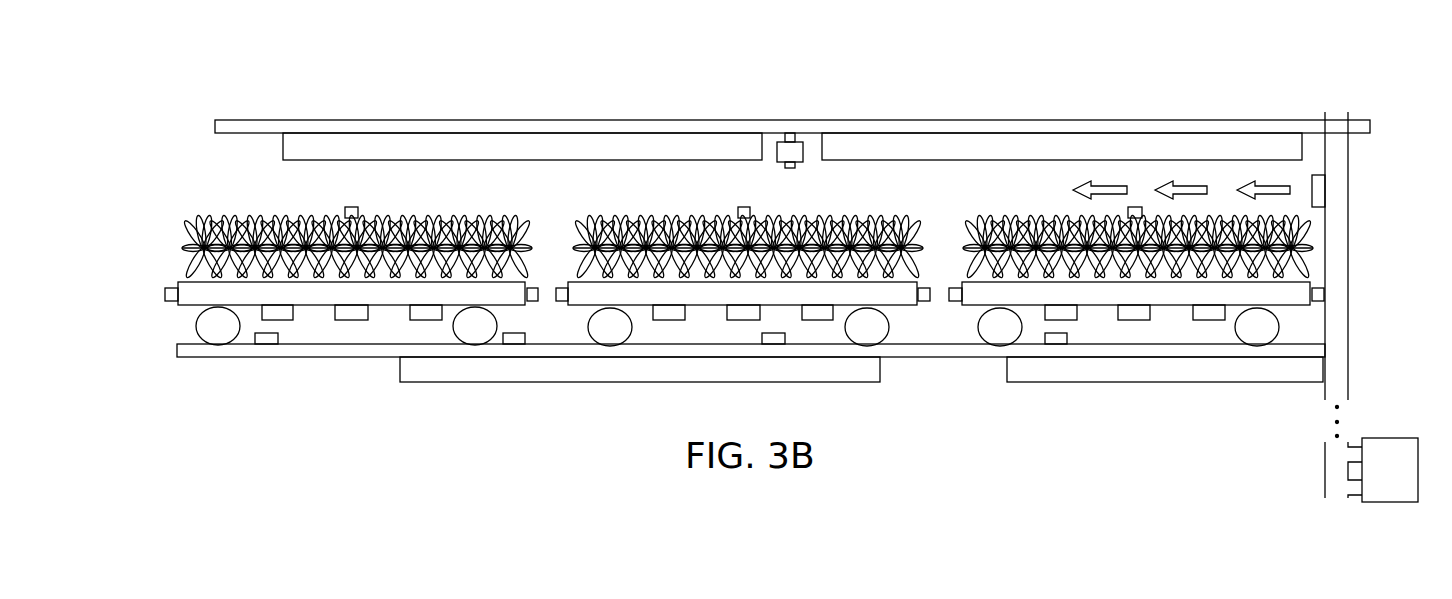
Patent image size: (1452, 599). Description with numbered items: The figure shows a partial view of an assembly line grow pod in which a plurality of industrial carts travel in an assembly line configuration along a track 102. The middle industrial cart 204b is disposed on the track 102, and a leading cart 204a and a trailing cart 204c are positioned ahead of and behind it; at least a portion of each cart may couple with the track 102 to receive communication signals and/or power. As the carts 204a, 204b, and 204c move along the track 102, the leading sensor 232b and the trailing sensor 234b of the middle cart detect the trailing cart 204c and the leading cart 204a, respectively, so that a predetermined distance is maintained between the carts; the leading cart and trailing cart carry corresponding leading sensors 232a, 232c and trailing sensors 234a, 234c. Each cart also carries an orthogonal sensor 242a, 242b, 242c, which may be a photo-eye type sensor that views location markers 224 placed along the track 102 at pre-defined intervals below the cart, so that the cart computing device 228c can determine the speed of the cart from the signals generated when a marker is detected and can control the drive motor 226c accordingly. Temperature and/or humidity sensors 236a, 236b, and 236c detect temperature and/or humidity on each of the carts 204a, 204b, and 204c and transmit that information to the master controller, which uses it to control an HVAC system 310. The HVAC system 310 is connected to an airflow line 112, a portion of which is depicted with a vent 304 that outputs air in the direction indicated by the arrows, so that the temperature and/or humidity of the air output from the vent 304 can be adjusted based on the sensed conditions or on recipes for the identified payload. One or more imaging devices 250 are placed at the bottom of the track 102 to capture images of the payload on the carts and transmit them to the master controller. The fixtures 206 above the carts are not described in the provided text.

The track 102 is at (792, 83).
The light fixture 206 is at (792, 168).
The imaging device 250 is at (766, 148).
The airflow line 112 is at (1375, 305).
The vent 304 is at (1310, 183).
The HVAC system 310 is at (1390, 438).
The temperature and/or humidity sensor 236a is at (418, 189).
The temperature and/or humidity sensor 236b is at (811, 189).
The temperature and/or humidity sensor 236c is at (1150, 151).
The leading cart 204a is at (404, 219).
The industrial cart 204b is at (797, 219).
The trailing cart 204c is at (1206, 240).
The leading sensor 232a is at (306, 340).
The leading sensor 232b is at (722, 352).
The leading sensor 232c is at (1114, 352).
The trailing sensor 234a is at (571, 244).
The trailing sensor 234b is at (964, 244).
The trailing sensor 234c is at (1380, 320).
The orthogonal sensor 242a is at (288, 321).
The orthogonal sensor 242b is at (678, 321).
The orthogonal sensor 242c is at (1073, 321).
The cart computing device 228c is at (1132, 373).
The drive motor 226c is at (1203, 373).
The location marker 224 is at (265, 344).